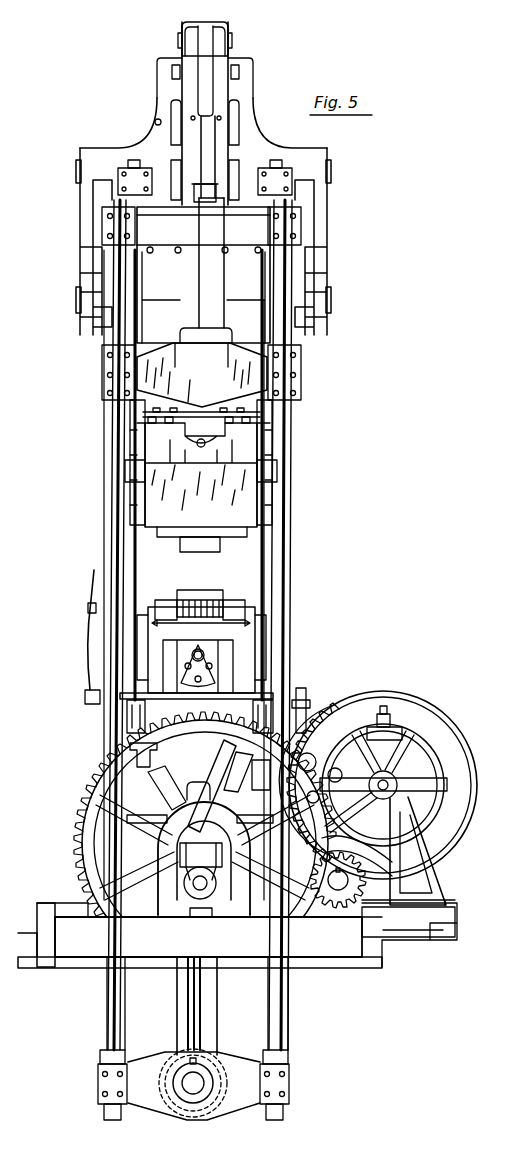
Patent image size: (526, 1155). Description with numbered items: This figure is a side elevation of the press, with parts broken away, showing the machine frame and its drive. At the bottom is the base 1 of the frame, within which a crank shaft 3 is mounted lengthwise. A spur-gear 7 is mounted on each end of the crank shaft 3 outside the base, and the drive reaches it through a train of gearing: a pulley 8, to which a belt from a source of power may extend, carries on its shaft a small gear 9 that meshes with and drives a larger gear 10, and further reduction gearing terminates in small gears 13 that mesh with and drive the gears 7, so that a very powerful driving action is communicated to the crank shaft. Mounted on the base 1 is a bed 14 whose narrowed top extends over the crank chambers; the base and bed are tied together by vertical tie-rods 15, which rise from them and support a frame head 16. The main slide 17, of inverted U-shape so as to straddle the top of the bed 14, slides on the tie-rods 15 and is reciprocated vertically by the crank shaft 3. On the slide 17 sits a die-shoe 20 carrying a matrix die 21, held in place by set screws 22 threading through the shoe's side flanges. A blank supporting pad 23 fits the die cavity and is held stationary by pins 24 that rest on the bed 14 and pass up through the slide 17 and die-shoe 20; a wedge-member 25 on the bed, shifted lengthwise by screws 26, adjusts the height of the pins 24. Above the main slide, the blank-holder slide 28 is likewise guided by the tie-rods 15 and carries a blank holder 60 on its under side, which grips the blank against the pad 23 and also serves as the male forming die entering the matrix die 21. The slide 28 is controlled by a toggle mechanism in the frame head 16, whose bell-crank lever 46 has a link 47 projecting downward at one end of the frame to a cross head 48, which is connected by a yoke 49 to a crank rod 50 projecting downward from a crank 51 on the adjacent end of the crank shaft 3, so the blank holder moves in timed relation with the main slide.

The base 1 is at (145, 880).
The crank shaft 3 is at (200, 835).
The spur-gear 7 is at (75, 808).
The pulley 8 is at (447, 787).
The small gear 9 is at (391, 771).
The larger gear 10 is at (306, 728).
The small gears 13 is at (340, 892).
The bed 14 is at (215, 688).
The tie-rods 15 is at (117, 538).
The frame head 16 is at (245, 275).
The main slide 17 is at (240, 663).
The die-shoe 20 is at (147, 617).
The matrix die 21 is at (168, 604).
The set screws 22 is at (140, 597).
The blank supporting pad 23 is at (205, 600).
The pins 24 is at (222, 610).
The wedge-member 25 is at (175, 657).
The screws 26 is at (175, 662).
The blank-holder slide 28 is at (243, 488).
The bell-crank lever 46 is at (203, 113).
The link 47 is at (197, 274).
The cross head 48 is at (201, 375).
The yoke 49 is at (113, 497).
The crank rod 50 is at (203, 1007).
The crank 51 is at (196, 886).
The blank holder 60 is at (195, 547).